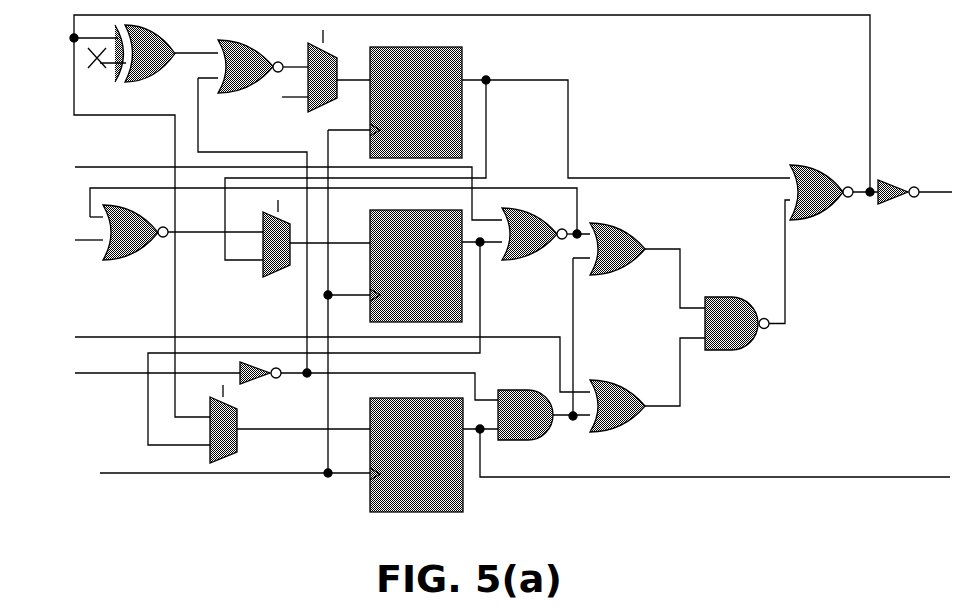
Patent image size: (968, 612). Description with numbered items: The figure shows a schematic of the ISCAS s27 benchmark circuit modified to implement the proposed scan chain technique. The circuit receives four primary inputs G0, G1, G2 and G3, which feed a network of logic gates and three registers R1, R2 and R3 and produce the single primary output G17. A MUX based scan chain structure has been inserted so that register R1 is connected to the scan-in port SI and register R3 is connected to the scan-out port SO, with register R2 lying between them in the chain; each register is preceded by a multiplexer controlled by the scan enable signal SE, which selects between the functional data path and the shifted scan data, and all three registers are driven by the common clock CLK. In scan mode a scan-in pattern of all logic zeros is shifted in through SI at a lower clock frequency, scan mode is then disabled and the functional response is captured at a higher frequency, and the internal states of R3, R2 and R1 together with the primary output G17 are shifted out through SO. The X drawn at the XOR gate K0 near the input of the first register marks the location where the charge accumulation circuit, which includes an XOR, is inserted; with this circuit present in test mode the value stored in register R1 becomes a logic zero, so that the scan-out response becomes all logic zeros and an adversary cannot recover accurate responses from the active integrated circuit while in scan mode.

The XOR gate K0 is at (145, 53).
The primary input G1 is at (85, 157).
The primary input G2 is at (85, 251).
The primary input G3 is at (85, 326).
The primary input G0 is at (85, 352).
The primary output G17 is at (869, 192).
The register R1 is at (416, 102).
The register R2 is at (416, 266).
The register R3 is at (416, 455).
The scan enable SE is at (269, 246).
The scan-in port SI is at (290, 88).
The scan-out port SO is at (930, 463).
The clock CLK is at (89, 463).